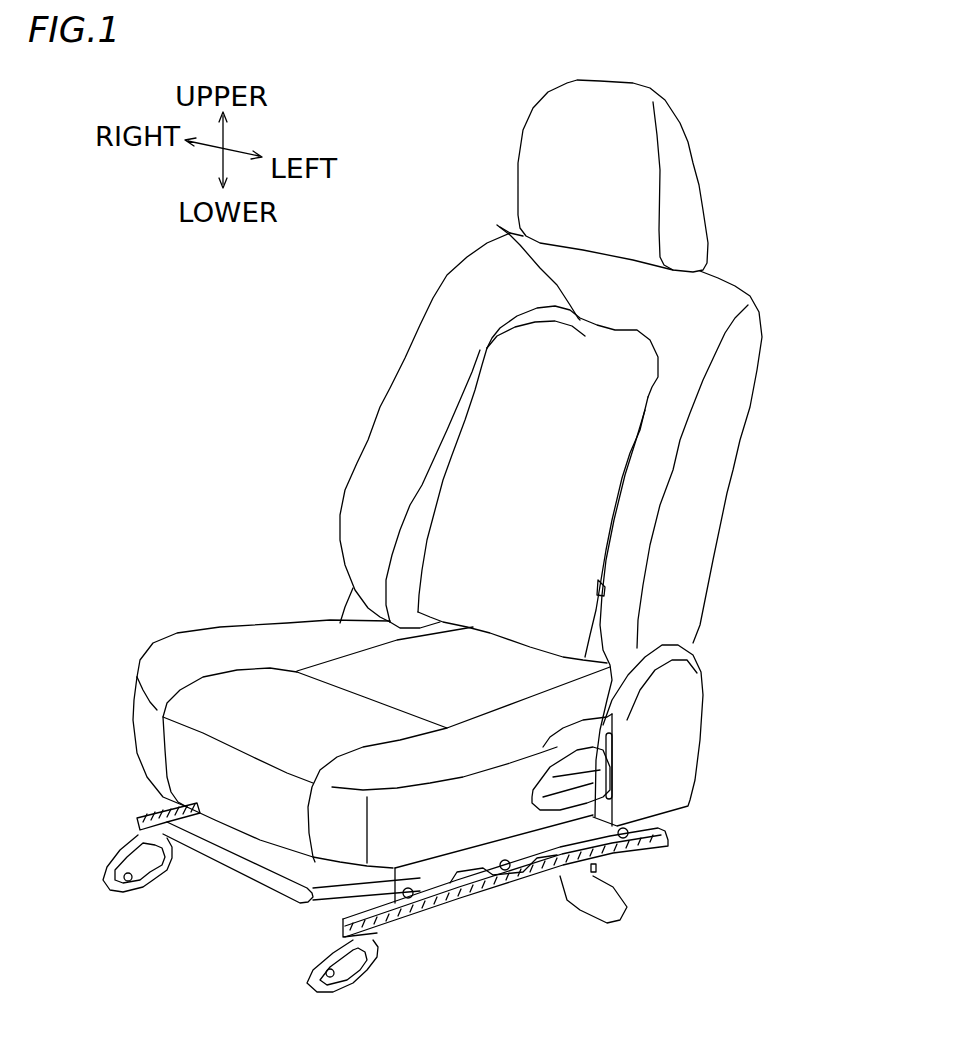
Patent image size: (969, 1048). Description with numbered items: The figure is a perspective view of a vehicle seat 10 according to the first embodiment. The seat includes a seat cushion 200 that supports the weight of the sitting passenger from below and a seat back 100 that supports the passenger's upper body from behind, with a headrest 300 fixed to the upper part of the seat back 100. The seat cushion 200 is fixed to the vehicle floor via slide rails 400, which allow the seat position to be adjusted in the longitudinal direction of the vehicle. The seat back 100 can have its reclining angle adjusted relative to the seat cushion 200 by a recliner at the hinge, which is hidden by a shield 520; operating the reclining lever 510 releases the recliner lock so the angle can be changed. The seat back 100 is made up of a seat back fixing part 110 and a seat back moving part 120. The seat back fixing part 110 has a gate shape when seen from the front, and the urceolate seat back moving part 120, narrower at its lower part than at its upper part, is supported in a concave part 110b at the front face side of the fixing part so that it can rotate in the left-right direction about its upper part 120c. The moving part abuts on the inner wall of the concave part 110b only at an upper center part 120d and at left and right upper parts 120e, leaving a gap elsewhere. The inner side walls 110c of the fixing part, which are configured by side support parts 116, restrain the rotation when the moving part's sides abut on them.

The vehicle seat 10 is at (441, 214).
The seat back 100 is at (764, 471).
The seat back fixing part 110 is at (737, 362).
The concave part 110b is at (417, 490).
The inner side walls 110c is at (407, 568).
The side support parts 116 is at (395, 428).
The seat back moving part 120 is at (425, 535).
The upper part 120c is at (711, 300).
The upper center part 120d is at (497, 225).
The left and right upper parts 120e is at (570, 359).
The seat cushion 200 is at (213, 615).
The headrest 300 is at (693, 162).
The slide rails 400 is at (494, 925).
The reclining lever 510 is at (617, 727).
The shield 520 is at (703, 693).